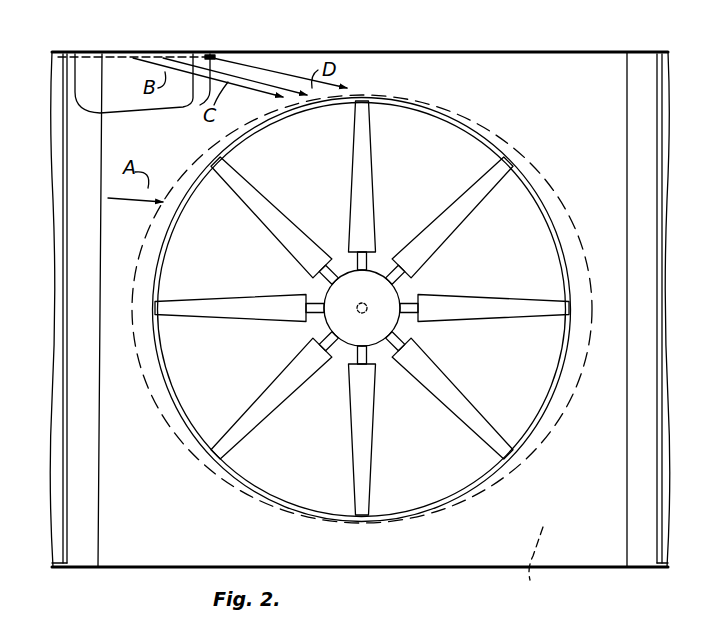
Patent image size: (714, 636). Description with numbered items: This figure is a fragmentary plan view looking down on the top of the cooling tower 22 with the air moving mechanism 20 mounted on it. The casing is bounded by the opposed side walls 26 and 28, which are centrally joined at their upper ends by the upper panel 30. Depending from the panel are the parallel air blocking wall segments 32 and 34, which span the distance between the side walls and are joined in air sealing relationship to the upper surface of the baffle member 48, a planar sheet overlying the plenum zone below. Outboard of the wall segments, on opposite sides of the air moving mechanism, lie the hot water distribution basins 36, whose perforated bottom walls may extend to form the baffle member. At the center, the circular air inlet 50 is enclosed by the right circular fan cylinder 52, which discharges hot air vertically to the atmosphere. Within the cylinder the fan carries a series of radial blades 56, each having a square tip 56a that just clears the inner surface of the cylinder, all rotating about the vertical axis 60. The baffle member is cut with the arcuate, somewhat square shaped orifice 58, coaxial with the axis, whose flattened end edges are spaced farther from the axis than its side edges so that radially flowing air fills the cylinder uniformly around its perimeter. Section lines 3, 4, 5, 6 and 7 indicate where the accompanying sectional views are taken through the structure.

The air moving mechanism 20 is at (362, 279).
The cooling tower 22 is at (612, 50).
The side wall 26 is at (123, 53).
The side wall 28 is at (417, 566).
The upper panel 30 is at (600, 550).
The wall segment 32 is at (96, 535).
The wall segment 34 is at (628, 437).
The hot water distribution basin 36 is at (58, 428).
The baffle member 48 is at (546, 564).
The circular air inlet 50 is at (418, 508).
The fan cylinder 52 is at (473, 489).
The radial blades 56 is at (480, 193).
The square tip 56a is at (222, 448).
The orifice 58 is at (180, 478).
The axis 60 is at (366, 306).
The section line 3- 3 is at (165, 308).
The section line 4- 4 is at (90, 172).
The section line 5- 5 is at (282, 56).
The section line 6- 6 is at (310, 57).
The section line 7- 7 is at (357, 97).